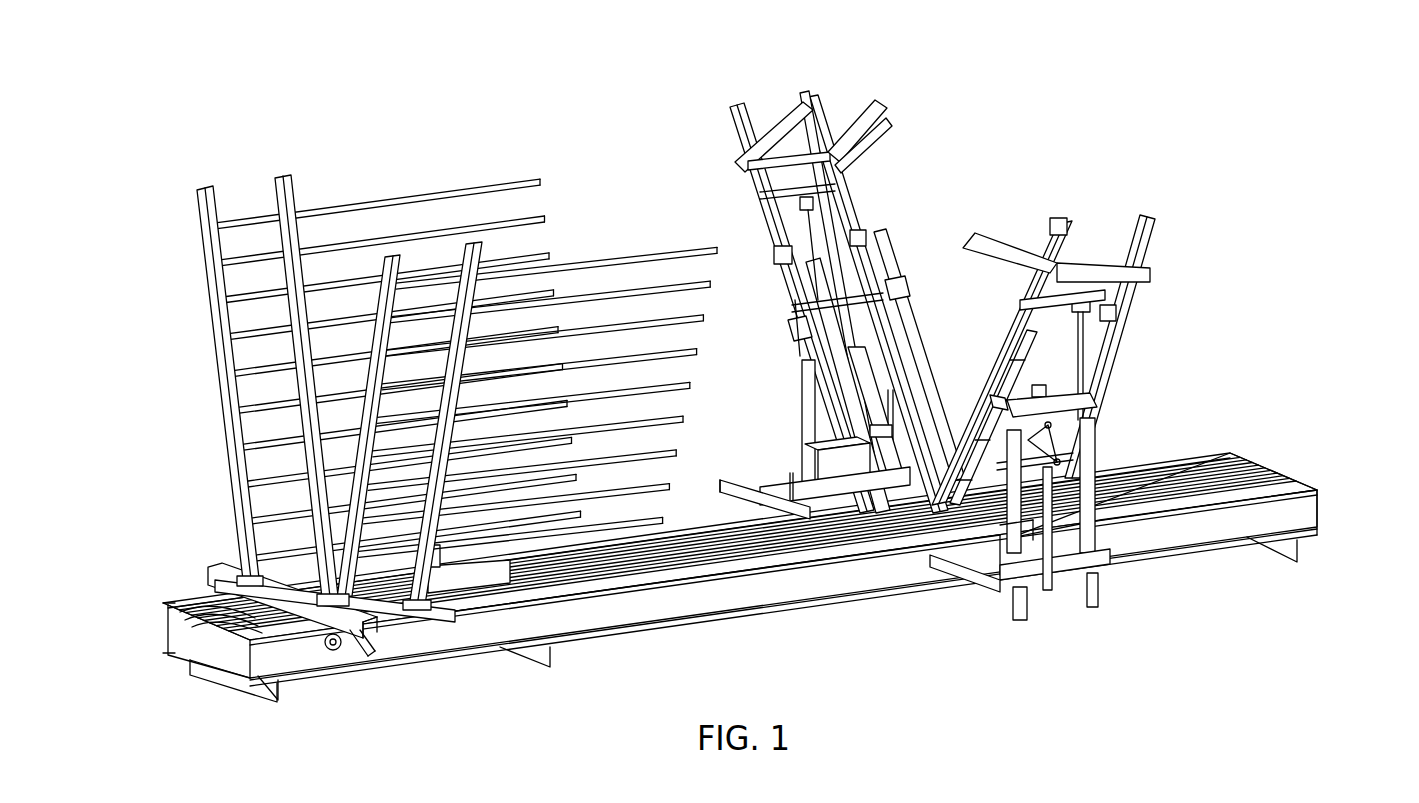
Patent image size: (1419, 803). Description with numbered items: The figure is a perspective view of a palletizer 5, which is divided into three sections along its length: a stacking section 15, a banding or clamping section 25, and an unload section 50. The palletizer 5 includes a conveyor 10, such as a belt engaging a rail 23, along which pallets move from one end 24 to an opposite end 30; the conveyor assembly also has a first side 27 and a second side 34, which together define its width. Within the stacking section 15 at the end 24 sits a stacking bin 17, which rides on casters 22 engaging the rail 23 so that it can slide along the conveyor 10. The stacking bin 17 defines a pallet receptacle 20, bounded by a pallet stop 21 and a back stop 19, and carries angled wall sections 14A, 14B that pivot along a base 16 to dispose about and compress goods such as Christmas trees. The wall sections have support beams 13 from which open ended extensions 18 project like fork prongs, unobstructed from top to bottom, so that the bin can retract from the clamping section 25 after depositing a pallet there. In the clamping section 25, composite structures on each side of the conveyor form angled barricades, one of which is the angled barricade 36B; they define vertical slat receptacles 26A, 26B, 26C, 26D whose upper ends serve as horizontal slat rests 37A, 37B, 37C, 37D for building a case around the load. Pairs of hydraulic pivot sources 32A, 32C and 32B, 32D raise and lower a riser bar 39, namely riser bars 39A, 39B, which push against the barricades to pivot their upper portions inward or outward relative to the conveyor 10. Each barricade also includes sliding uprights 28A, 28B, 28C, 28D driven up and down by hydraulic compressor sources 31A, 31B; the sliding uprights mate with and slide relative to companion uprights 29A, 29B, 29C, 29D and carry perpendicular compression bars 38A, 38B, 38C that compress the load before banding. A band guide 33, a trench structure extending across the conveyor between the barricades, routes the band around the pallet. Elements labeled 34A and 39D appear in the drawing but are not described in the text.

The palletizer 5 is at (160, 227).
The conveyor 10 is at (1243, 480).
The support beams 13 is at (199, 383).
The angled wall section 14A is at (203, 189).
The angled wall section 14B is at (397, 258).
The stacking section 15 is at (657, 73).
The base 16 is at (469, 578).
The stacking bin 17 is at (220, 372).
The open ended extensions 18 is at (540, 180).
The back stop 19 is at (205, 572).
The pallet receptacle 20 is at (440, 553).
The pallet stop 21 is at (458, 612).
The casters 22 is at (337, 650).
The rail 23 is at (740, 576).
The one end of the conveyor 24 is at (188, 653).
The banding section 25 is at (717, 80).
The vertical slat receptacle 26A is at (797, 308).
The vertical slat receptacle 26B is at (980, 384).
The vertical slat receptacle 26C is at (900, 287).
The vertical slat receptacle 26D is at (1105, 360).
The first side 27 is at (178, 597).
The sliding upright 28A is at (738, 165).
The sliding upright 28B is at (1040, 292).
The sliding upright 28C is at (845, 175).
The sliding upright 28D is at (1152, 236).
The companion upright 29A is at (793, 360).
The companion upright 29B is at (977, 500).
The companion upright 29C is at (863, 290).
The companion upright 29D is at (1097, 395).
The opposite end of the conveyor 30 is at (1317, 513).
The hydraulic compressor source 31A is at (880, 427).
The hydraulic compressor source 31B is at (1040, 390).
The hydraulic pivot source 32A is at (803, 423).
The hydraulic pivot source 32B is at (1013, 555).
The hydraulic pivot source 32C is at (880, 383).
The hydraulic pivot source 32D is at (1083, 537).
The band guide 33 is at (702, 513).
The second side 34 is at (702, 611).
The sensor post 34A is at (822, 89).
The angled barricade 36B is at (1064, 216).
The horizontal slat rest 37A is at (785, 250).
The horizontal slat rest 37B is at (1000, 333).
The horizontal slat rest 37C is at (872, 237).
The horizontal slat rest 37D is at (1110, 312).
The compression bar 38A is at (771, 138).
The compression bar 38B is at (980, 243).
The compression bar 38C is at (882, 103).
The riser bar 39 is at (787, 183).
The riser bar 39A is at (800, 356).
The riser bar 39B is at (1095, 402).
The sensor rod 39D is at (1105, 262).
The unload section 50 is at (1268, 434).